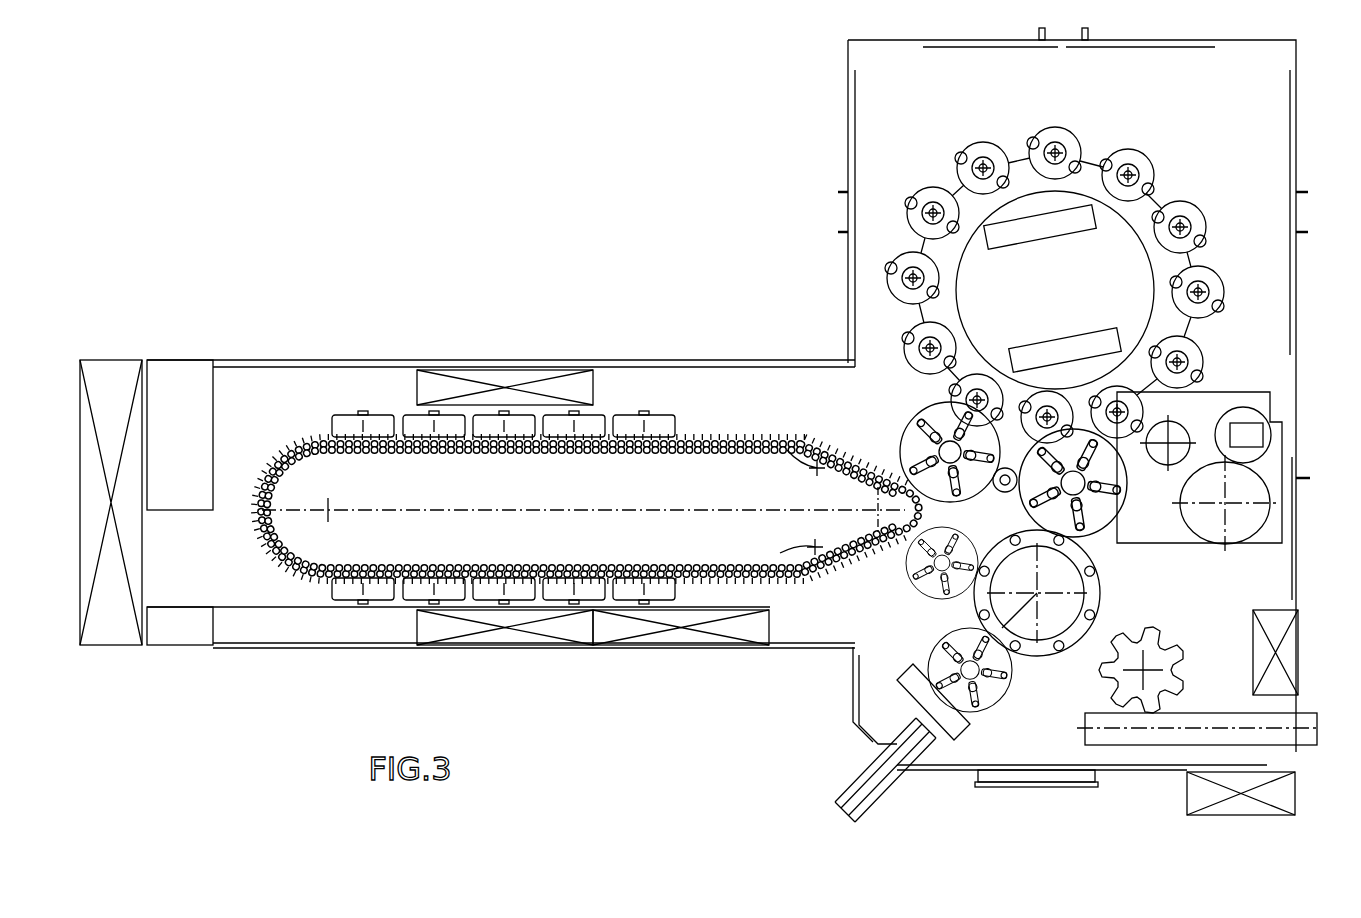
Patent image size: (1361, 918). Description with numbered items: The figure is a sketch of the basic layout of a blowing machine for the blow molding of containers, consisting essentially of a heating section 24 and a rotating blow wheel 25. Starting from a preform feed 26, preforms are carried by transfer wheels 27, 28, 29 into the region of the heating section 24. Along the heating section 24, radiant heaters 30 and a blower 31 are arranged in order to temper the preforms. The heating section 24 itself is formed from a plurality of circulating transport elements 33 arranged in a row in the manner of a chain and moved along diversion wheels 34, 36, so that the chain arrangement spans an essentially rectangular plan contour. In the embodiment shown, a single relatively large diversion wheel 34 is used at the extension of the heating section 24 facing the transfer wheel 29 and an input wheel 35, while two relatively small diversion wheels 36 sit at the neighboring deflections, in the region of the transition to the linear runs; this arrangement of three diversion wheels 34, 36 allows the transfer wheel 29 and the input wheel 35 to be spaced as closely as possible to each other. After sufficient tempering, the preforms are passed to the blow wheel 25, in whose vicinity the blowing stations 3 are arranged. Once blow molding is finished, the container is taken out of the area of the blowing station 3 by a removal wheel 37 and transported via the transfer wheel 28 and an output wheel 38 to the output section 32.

The blowing station 3 is at (893, 262).
The heating section 24 is at (637, 398).
The blow wheel 25 is at (1000, 215).
The preform feed 26 is at (887, 768).
The transfer wheel 27 is at (983, 712).
The transfer wheel 28 is at (1037, 658).
The transfer wheel 29 is at (905, 600).
The radiant heaters 30 is at (375, 412).
The blower 31 is at (497, 368).
The output section 32 is at (1305, 742).
The transport elements 33 is at (297, 572).
The diversion wheel 34 is at (331, 515).
The input wheel 35 is at (912, 402).
The diversion wheels 36 is at (817, 468).
The removal wheel 37 is at (1120, 505).
The output wheel 38 is at (1155, 682).